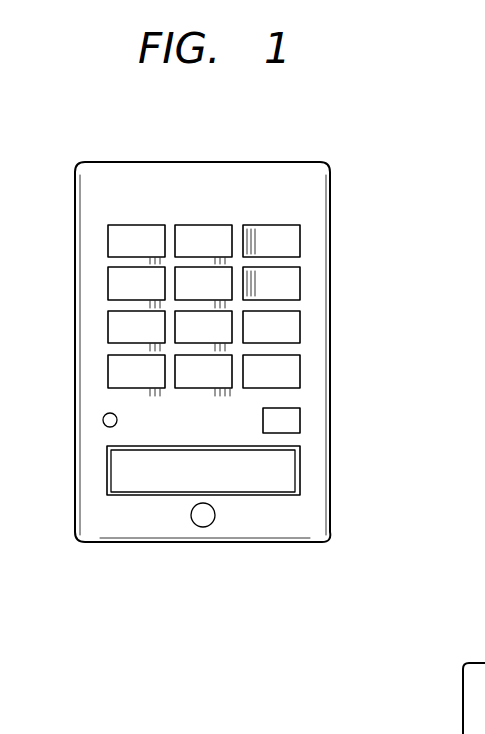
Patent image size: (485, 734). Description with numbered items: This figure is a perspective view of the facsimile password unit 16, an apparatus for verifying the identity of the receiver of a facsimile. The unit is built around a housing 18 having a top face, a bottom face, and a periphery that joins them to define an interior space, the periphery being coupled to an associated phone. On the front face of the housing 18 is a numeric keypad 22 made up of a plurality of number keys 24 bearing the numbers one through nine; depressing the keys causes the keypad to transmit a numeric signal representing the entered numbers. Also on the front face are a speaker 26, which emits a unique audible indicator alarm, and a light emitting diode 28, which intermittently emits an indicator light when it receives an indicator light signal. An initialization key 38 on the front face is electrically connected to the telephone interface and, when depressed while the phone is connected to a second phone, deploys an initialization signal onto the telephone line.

The facsimile password unit 16 is at (330, 162).
The housing 18 is at (315, 418).
The numeric keypad 22 is at (298, 396).
The number keys 24 is at (113, 245).
The speaker 26 is at (203, 527).
The light emitting diode 28 is at (104, 418).
The initialization key 38 is at (288, 423).